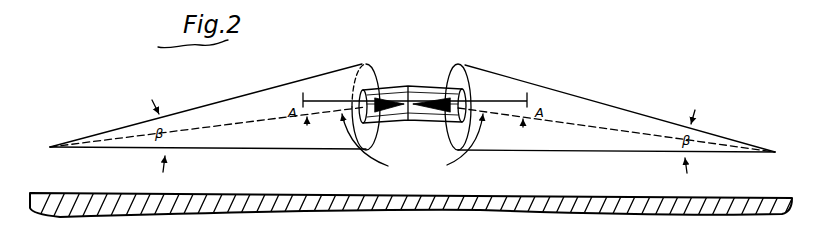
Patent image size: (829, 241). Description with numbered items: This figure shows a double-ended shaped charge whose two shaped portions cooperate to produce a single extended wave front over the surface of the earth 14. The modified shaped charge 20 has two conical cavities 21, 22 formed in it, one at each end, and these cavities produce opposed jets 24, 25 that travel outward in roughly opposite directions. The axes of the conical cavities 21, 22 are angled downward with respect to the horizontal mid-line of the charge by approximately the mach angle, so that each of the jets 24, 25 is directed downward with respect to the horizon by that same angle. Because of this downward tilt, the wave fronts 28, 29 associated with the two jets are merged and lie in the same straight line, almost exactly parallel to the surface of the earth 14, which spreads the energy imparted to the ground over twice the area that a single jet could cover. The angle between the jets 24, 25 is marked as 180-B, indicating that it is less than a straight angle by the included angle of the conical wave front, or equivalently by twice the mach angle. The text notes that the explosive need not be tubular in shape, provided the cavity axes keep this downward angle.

The surface of the earth 14 is at (208, 193).
The shaped charge 20 is at (411, 96).
The conical cavity 21 is at (356, 62).
The conical cavity 22 is at (467, 100).
The jet 24 is at (268, 120).
The jet 25 is at (563, 122).
The wave front 28 is at (276, 148).
The wave front 29 is at (574, 152).
The angle between the jets 180-B is at (412, 147).